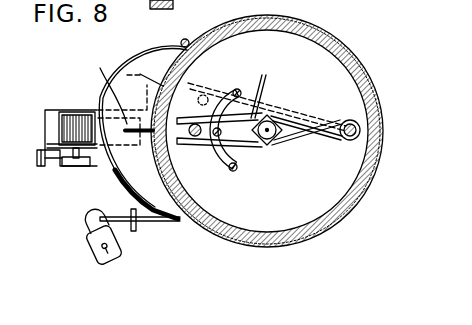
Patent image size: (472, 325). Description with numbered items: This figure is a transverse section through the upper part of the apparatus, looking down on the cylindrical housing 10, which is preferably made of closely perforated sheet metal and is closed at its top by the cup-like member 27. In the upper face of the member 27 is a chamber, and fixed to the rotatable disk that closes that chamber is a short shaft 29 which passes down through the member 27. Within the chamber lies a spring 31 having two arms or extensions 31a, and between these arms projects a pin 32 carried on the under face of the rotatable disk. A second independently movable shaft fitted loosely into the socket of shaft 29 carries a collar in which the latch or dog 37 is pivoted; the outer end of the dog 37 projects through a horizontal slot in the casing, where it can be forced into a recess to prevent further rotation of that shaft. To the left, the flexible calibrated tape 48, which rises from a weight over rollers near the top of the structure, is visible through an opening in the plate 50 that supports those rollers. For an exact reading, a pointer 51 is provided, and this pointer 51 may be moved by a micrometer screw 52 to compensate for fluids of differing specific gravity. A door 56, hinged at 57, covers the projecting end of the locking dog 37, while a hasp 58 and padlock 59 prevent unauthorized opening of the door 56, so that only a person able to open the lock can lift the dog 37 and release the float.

The housing 10 is at (375, 90).
The cup-like member 27 is at (367, 188).
The short shaft 29 is at (268, 134).
The spring 31 is at (344, 121).
The arms or extensions 31a is at (271, 84).
The pin 32 is at (195, 123).
The latch or dog 37 is at (113, 75).
The flexible calibrated tape 48 is at (72, 112).
The plate 50 is at (47, 122).
The pointer 51 is at (80, 166).
The micrometer screw 52 is at (66, 164).
The door 56 is at (107, 180).
The hinge 57 is at (186, 39).
The hasp 58 is at (143, 221).
The padlock 59 is at (107, 262).